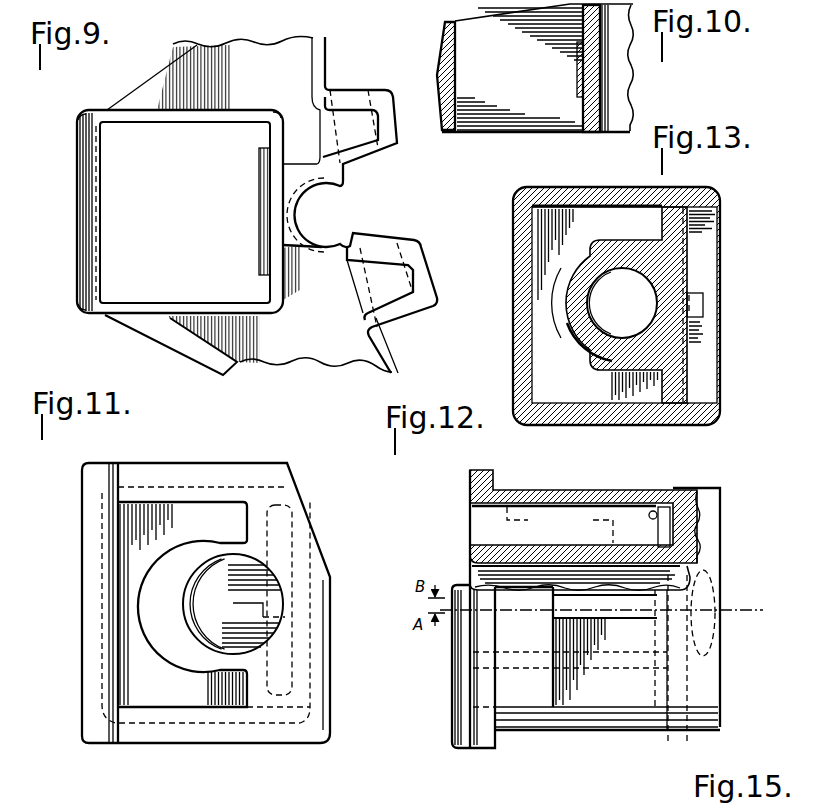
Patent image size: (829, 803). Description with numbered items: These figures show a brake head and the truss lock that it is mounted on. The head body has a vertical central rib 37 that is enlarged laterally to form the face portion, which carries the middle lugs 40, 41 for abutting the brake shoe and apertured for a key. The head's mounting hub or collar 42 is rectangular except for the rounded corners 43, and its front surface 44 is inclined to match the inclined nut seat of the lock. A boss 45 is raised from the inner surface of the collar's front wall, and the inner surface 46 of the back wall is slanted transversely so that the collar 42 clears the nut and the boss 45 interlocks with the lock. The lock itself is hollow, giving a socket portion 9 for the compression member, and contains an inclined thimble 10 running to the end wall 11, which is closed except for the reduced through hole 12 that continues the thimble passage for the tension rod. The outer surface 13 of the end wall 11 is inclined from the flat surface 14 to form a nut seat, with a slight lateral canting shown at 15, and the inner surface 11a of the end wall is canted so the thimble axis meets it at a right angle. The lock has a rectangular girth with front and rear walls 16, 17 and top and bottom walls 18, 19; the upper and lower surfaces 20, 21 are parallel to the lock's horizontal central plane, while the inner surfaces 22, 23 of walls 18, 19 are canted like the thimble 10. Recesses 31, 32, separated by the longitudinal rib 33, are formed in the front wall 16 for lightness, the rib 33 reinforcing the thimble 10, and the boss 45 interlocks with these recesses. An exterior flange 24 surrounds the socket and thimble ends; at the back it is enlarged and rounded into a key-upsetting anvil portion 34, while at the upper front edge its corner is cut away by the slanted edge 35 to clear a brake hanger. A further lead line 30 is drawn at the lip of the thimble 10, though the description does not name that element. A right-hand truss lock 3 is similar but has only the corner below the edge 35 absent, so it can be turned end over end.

In FIG. 11, the truss lock 3 is at (75, 478).
In FIG. 13, the socket portion 9 is at (604, 220).
In FIG. 11, the socket portion 9 is at (231, 512).
In FIG. 9, the inclined sleeve or thimble 10 is at (48, 180).
In FIG. 13, the inclined sleeve or thimble 10 is at (620, 250).
In FIG. 11, the inclined sleeve or thimble 10 is at (165, 603).
In FIG. 12, the inclined sleeve or thimble 10 is at (565, 535).
In FIG. 12, the end wall 11 is at (688, 489).
In FIG. 12, the inner surface of end wall 11a is at (657, 490).
In FIG. 13, the reduced through hole 12 is at (652, 303).
In FIG. 11, the reduced through hole 12 is at (222, 621).
In FIG. 12, the reduced through hole 12 is at (500, 577).
In FIG. 12, the outer surface of end wall 13 is at (485, 462).
In FIG. 11, the flat surface 14 is at (45, 575).
In FIG. 12, the lateral canting of seat 15 is at (705, 712).
In FIG. 11, the front wall 16 is at (273, 537).
In FIG. 12, the front wall 16 is at (540, 693).
In FIG. 13, the rear wall 17 is at (518, 282).
In FIG. 11, the rear wall 17 is at (102, 532).
In FIG. 13, the top wall 18 is at (580, 194).
In FIG. 11, the top wall 18 is at (195, 483).
In FIG. 12, the top wall 18 is at (582, 490).
In FIG. 13, the bottom wall 19 is at (600, 417).
In FIG. 11, the bottom wall 19 is at (223, 727).
In FIG. 13, the upper surface 20 is at (652, 179).
In FIG. 12, the upper surface 20 is at (545, 490).
In FIG. 13, the lower surface 21 is at (667, 422).
In FIG. 12, the lower surface 21 is at (597, 731).
In FIG. 13, the upper inner surface 22 is at (593, 208).
In FIG. 12, the upper inner surface 22 is at (612, 504).
In FIG. 13, the lower inner surface 23 is at (560, 403).
In FIG. 12, the lower inner surface 23 is at (523, 708).
In FIG. 11, the exterior flange 24 is at (230, 470).
In FIG. 12, the exterior flange 24 is at (470, 478).
In FIG. 11, the lip 30 is at (207, 567).
In FIG. 12, the lip 30 is at (472, 566).
In FIG. 13, the recess 31 is at (707, 235).
In FIG. 13, the recess 32 is at (707, 377).
In FIG. 12, the recess 32 is at (585, 700).
In FIG. 13, the longitudinal rib 33 is at (705, 307).
In FIG. 11, the longitudinal rib 33 is at (273, 590).
In FIG. 12, the longitudinal rib 33 is at (630, 615).
In FIG. 11, the key-upsetting bead or anvil portion 34 is at (88, 660).
In FIG. 12, the key-upsetting bead or anvil portion 34 is at (457, 682).
In FIG. 11, the slanted edge 35 is at (293, 475).
In FIG. 9, the vertical central rib 37 is at (250, 50).
In FIG. 9, the middle lug 40 is at (378, 88).
In FIG. 9, the middle lug 41 is at (415, 228).
In FIG. 9, the mounting hub or collar 42 is at (205, 123).
In FIG. 10, the mounting hub or collar 42 is at (503, 123).
In FIG. 9, the rounded corners 43 is at (83, 110).
In FIG. 10, the front surface of collar 44 is at (469, 20).
In FIG. 9, the projection or boss 45 is at (258, 202).
In FIG. 10, the projection or boss 45 is at (576, 69).
In FIG. 9, the inner surface of back wall 46 is at (93, 250).
In FIG. 10, the inner surface of back wall 46 is at (455, 83).